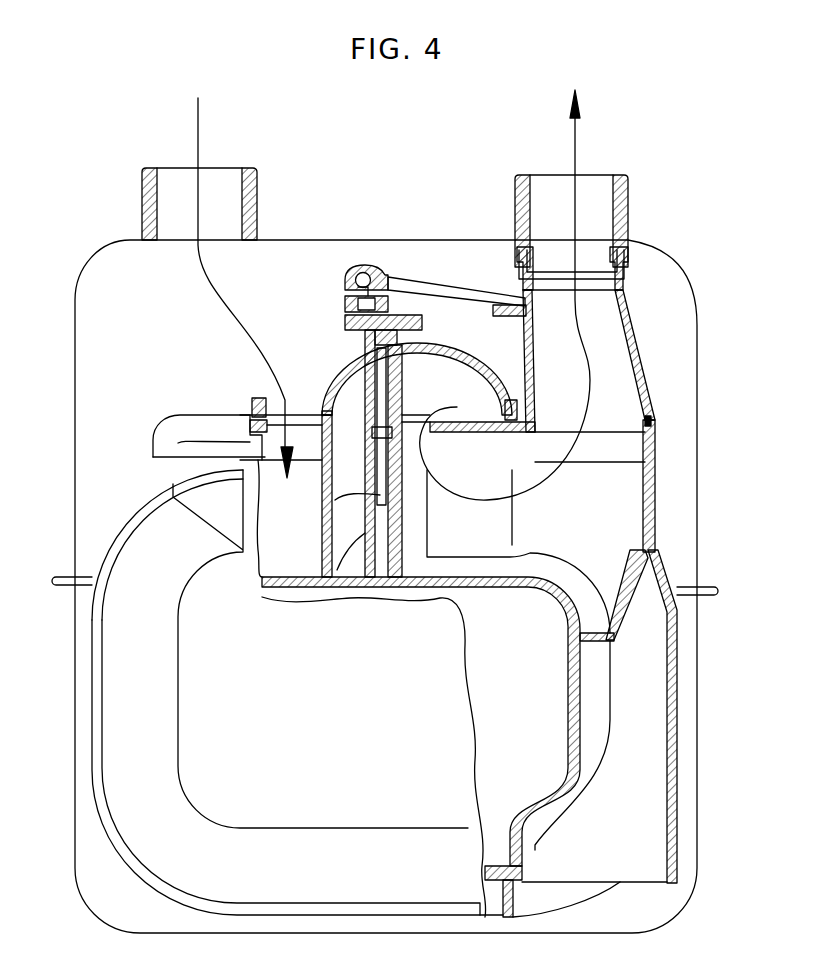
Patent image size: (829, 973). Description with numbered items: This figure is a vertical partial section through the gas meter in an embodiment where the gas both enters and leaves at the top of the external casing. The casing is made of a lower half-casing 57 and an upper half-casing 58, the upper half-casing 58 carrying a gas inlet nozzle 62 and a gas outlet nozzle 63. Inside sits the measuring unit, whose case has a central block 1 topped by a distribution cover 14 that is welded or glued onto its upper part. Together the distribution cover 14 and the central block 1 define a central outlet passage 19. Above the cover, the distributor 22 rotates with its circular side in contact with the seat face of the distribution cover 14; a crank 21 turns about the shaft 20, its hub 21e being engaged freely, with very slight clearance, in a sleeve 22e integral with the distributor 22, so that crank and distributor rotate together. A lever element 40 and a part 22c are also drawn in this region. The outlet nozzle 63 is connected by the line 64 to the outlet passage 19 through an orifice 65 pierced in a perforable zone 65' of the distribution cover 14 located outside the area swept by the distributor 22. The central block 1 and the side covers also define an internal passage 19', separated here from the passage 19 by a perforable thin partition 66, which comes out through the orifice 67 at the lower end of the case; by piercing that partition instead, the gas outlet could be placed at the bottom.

The central block 1 is at (430, 595).
The distribution cover 14 is at (163, 440).
The central outlet passage 19 is at (486, 507).
The internal passage 19' is at (588, 745).
The shaft 20 is at (338, 494).
The crank 21 is at (395, 310).
The hub 21e is at (402, 372).
The distributor 22 is at (481, 355).
The flange 22c is at (246, 399).
The sleeve 22e is at (353, 368).
The lever arm 40 is at (448, 292).
The lower half-casing 57 is at (75, 803).
The upper half-casing 58 is at (75, 492).
The gas inlet nozzle 62 is at (258, 182).
The gas outlet nozzle 63 is at (630, 187).
The line 64 is at (645, 357).
The orifice 65 is at (644, 486).
The perforable zone 65' is at (678, 401).
The perforable thin partition 66 is at (622, 611).
The orifice 67 is at (657, 870).